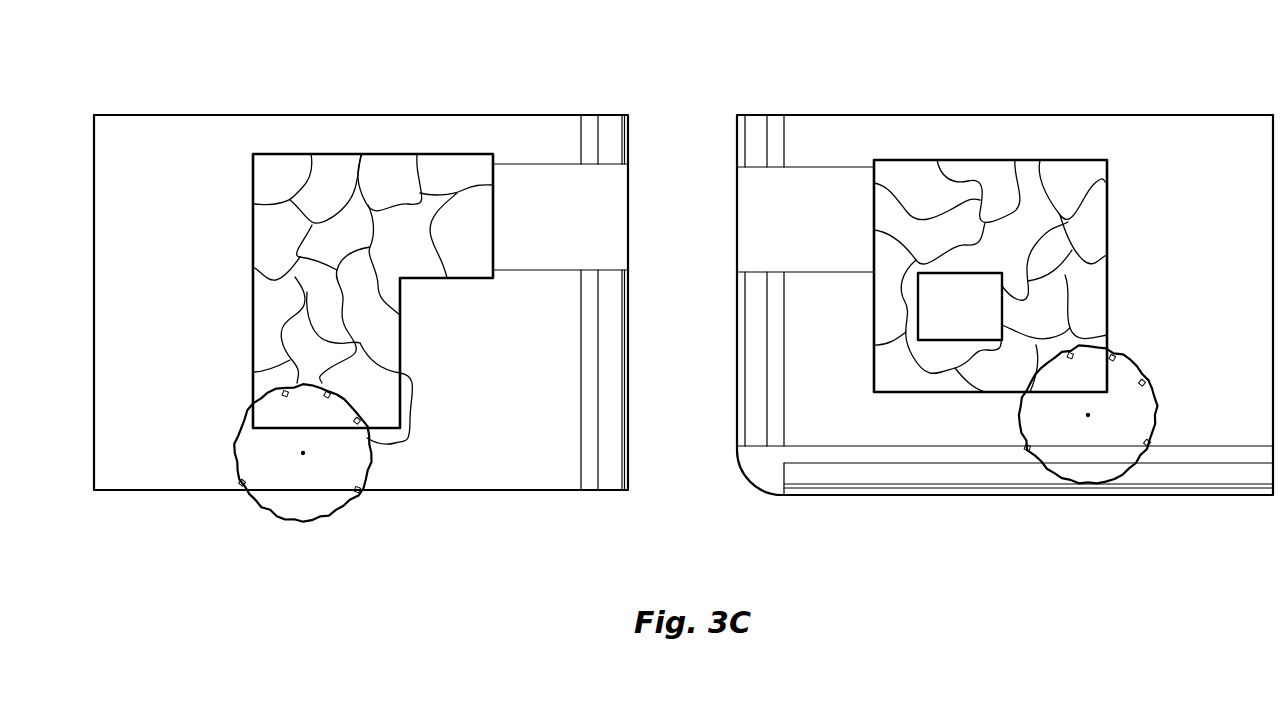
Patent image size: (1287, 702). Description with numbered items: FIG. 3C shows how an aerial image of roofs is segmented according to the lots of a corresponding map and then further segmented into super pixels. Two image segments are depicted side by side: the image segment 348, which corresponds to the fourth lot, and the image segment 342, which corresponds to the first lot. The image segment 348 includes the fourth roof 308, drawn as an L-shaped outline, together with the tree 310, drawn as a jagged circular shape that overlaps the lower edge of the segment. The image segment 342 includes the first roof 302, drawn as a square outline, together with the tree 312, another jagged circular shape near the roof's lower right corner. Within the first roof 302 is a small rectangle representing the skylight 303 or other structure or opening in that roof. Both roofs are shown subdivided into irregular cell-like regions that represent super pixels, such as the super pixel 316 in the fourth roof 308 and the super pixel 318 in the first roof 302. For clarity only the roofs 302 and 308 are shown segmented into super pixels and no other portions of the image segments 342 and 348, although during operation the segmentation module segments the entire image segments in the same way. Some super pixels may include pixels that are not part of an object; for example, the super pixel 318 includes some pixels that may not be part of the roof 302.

The image segment 348 is at (94, 259).
The fourth roof 308 is at (254, 378).
The super pixel 316 is at (338, 167).
The tree 310 is at (352, 497).
The image segment 342 is at (1184, 115).
The first roof 302 is at (937, 392).
The super pixel 318 is at (910, 167).
The skylight 303 is at (977, 287).
The tree 312 is at (1127, 470).